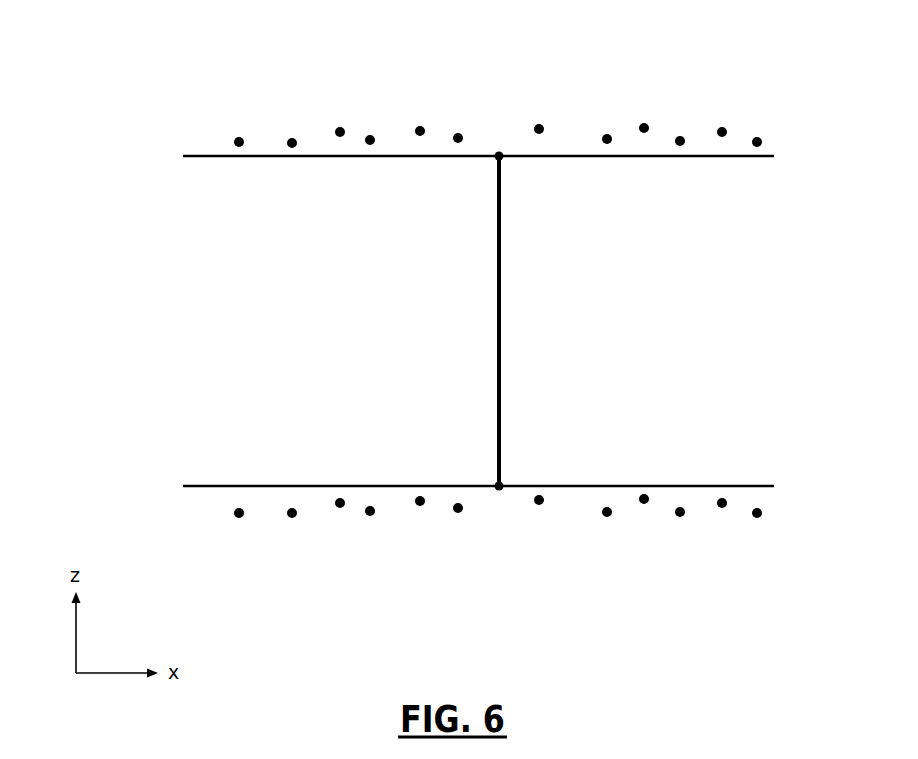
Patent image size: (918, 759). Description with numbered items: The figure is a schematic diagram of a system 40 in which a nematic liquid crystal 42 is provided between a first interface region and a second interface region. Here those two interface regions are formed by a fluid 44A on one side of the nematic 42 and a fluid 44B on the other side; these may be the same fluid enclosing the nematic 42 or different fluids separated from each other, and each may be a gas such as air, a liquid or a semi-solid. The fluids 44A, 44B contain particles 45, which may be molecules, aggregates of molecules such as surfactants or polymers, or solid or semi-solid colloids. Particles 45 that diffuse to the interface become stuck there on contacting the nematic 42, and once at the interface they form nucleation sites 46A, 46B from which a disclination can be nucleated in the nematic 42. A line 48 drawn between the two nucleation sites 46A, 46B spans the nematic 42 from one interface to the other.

The system 40 is at (283, 48).
The nematic liquid crystal 42 is at (189, 180).
The fluid 44A is at (189, 131).
The fluid 44B is at (184, 501).
The particles 45 is at (424, 129).
The nucleation site 46A is at (500, 156).
The nucleation site 46B is at (499, 487).
The connecting member 48 is at (500, 250).